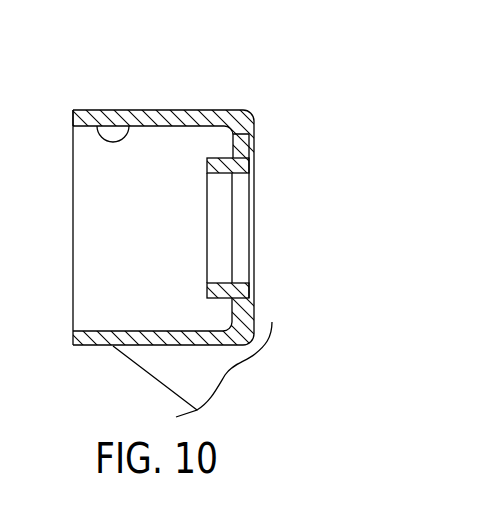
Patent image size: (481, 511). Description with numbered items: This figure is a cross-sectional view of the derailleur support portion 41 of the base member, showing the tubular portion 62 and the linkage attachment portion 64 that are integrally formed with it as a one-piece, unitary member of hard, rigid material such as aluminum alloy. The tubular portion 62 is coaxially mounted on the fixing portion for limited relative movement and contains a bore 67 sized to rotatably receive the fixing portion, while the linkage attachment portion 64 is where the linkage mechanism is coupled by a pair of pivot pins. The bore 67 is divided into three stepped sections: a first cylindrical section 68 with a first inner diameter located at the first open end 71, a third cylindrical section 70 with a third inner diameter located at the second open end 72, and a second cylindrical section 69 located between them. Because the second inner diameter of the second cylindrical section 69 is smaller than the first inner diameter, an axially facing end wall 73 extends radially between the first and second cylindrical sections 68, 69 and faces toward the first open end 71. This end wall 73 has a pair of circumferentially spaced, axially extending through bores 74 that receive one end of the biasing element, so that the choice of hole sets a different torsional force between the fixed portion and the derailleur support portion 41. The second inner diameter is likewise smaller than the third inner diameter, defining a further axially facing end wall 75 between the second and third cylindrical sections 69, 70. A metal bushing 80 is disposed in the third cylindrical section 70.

The derailleur support portion 41 is at (204, 67).
The tubular portion 62 is at (155, 108).
The linkage attachment portion 64 is at (144, 376).
The bore 67 is at (102, 295).
The first cylindrical section 68 is at (101, 128).
The second cylindrical section 69 is at (212, 175).
The third cylindrical section 70 is at (246, 170).
The first open end 71 is at (72, 152).
The second open end 72 is at (254, 265).
The axially facing end wall 73 is at (232, 311).
The axially extending through bores 74 is at (240, 142).
The axially facing end wall 75 is at (232, 243).
The metal bushing 80 is at (244, 174).